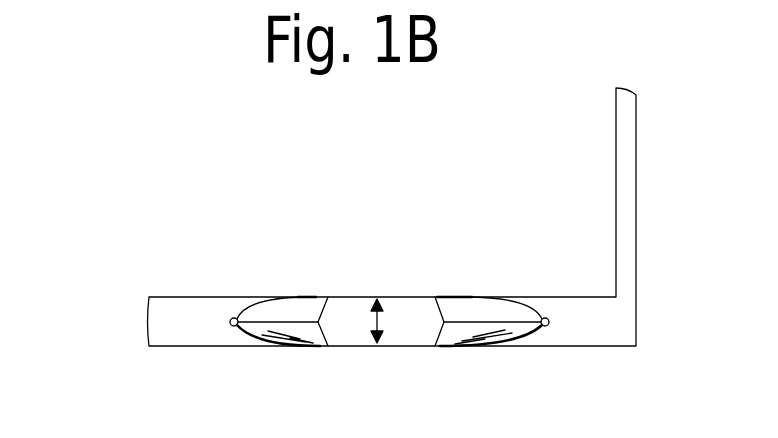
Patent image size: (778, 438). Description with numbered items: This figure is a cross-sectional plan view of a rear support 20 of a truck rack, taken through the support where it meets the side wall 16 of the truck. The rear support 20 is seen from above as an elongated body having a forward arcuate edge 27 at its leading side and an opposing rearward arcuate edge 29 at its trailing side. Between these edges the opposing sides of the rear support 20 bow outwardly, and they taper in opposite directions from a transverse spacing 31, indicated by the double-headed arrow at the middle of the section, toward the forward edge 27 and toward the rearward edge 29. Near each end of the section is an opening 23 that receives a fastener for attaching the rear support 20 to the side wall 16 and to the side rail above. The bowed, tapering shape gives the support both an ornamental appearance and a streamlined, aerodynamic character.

The side wall 16 is at (182, 315).
The rear support 20 is at (333, 340).
The openings 23 is at (544, 318).
The forward arcuate edge 27 is at (273, 312).
The rearward arcuate edge 29 is at (475, 335).
The transverse spacing 31 is at (376, 320).